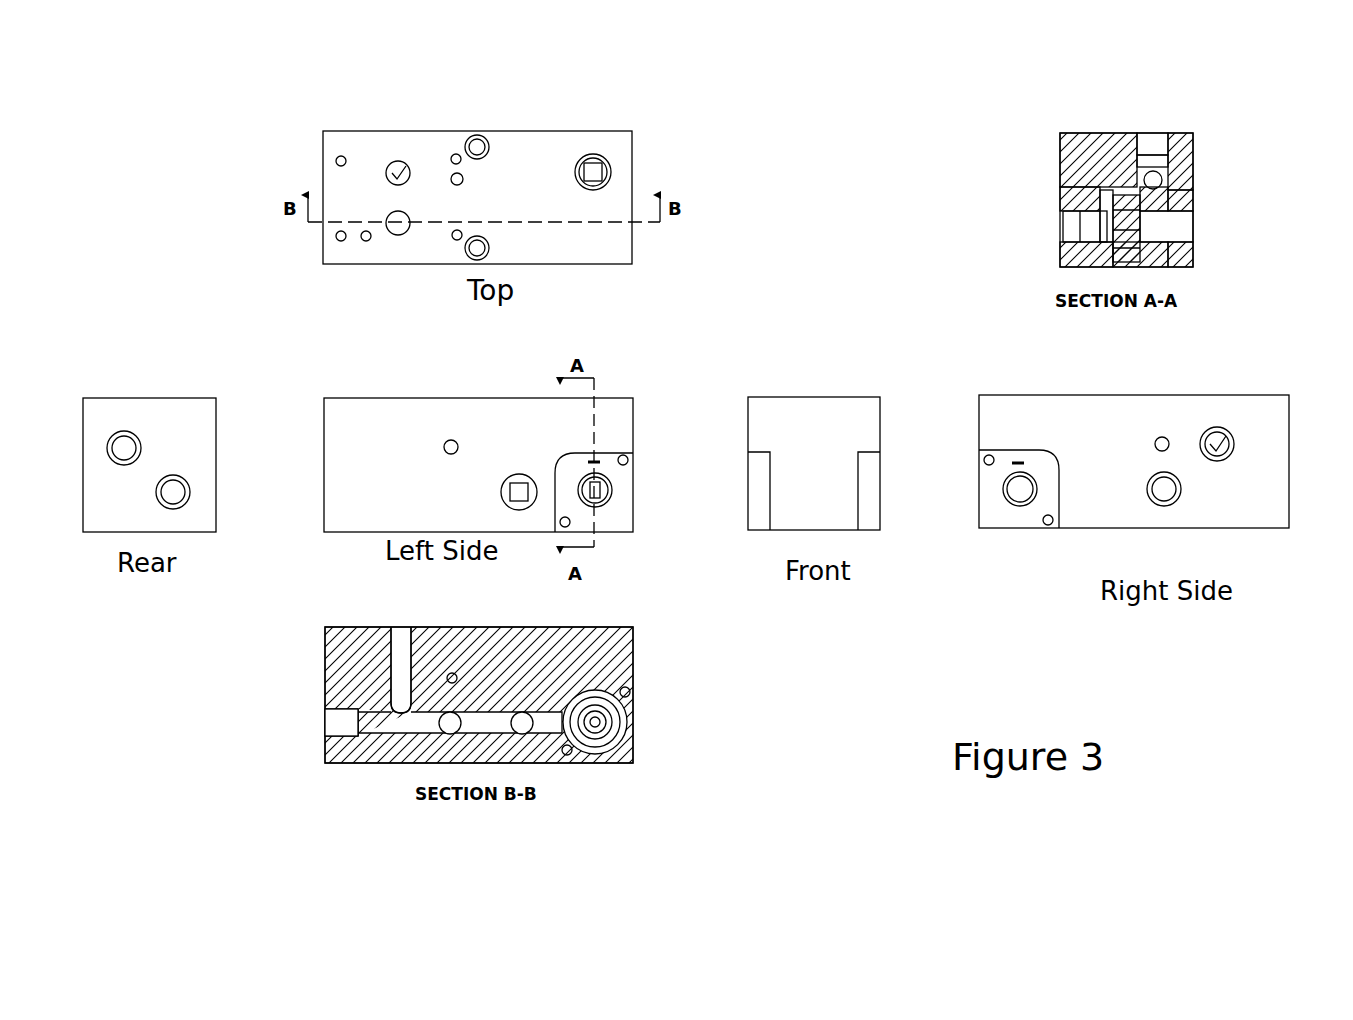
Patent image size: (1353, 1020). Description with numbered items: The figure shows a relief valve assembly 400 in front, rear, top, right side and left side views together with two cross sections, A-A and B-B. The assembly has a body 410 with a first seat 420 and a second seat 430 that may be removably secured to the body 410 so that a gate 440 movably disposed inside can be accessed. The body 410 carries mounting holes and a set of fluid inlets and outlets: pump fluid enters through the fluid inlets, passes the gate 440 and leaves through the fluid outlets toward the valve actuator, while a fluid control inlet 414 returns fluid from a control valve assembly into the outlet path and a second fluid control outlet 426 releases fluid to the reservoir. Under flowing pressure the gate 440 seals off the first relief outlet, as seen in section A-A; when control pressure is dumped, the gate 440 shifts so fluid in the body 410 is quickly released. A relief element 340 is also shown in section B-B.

The relief valve assembly 400 is at (866, 140).
The body 410 is at (790, 410).
The fluid control inlet 414 is at (398, 161).
The first seat 420 is at (762, 520).
The second fluid control outlet 426 is at (1225, 430).
The second seat 430 is at (872, 517).
The gate 440 is at (1143, 236).
The check valve 340 is at (620, 722).